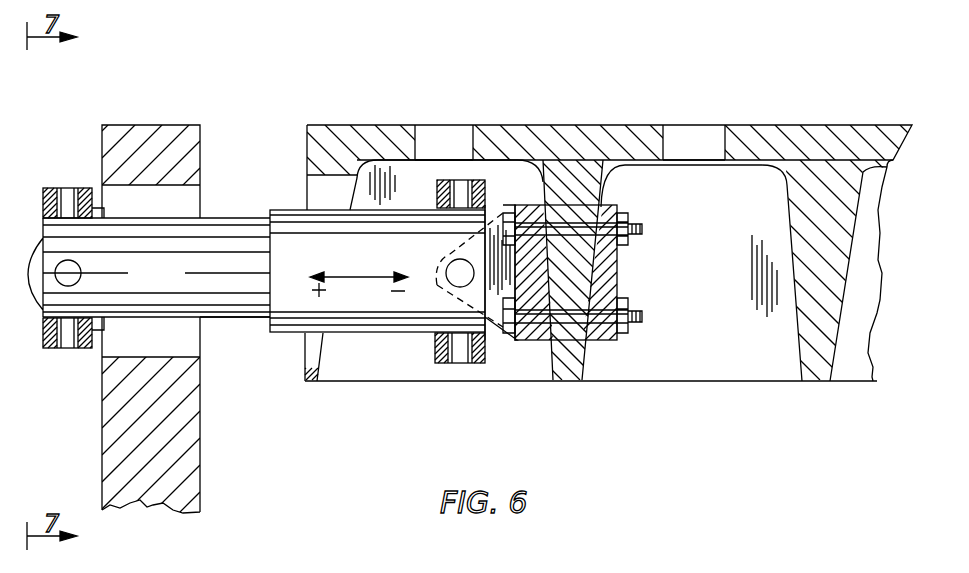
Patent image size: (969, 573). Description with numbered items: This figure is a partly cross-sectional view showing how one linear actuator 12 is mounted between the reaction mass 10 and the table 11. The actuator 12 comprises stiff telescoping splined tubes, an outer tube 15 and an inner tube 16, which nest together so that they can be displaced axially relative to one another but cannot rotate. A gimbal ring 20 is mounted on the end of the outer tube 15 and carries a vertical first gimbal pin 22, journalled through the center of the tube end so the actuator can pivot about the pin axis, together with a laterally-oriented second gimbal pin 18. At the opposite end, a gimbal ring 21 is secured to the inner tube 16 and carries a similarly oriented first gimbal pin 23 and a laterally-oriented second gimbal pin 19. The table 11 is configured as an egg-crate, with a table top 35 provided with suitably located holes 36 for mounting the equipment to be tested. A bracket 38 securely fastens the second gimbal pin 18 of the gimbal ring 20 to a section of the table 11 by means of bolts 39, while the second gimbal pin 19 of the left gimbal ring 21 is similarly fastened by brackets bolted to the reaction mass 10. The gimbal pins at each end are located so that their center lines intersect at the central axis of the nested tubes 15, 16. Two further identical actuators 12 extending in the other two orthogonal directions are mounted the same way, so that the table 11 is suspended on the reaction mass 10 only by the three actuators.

The reaction mass 10 is at (157, 497).
The table 11 is at (813, 137).
The actuator 12 is at (232, 334).
The outer tube 15 is at (377, 271).
The inner tube 16 is at (149, 269).
The second gimbal pin 18 is at (455, 272).
The second gimbal pin 19 is at (66, 272).
The gimbal ring 20 is at (480, 363).
The gimbal ring 21 is at (45, 349).
The first gimbal pin 22 is at (458, 363).
The first gimbal pin 23 is at (68, 348).
The table top 35 is at (546, 126).
The holes 36 is at (432, 138).
The bracket 38 is at (500, 205).
The bolts 39 is at (617, 220).